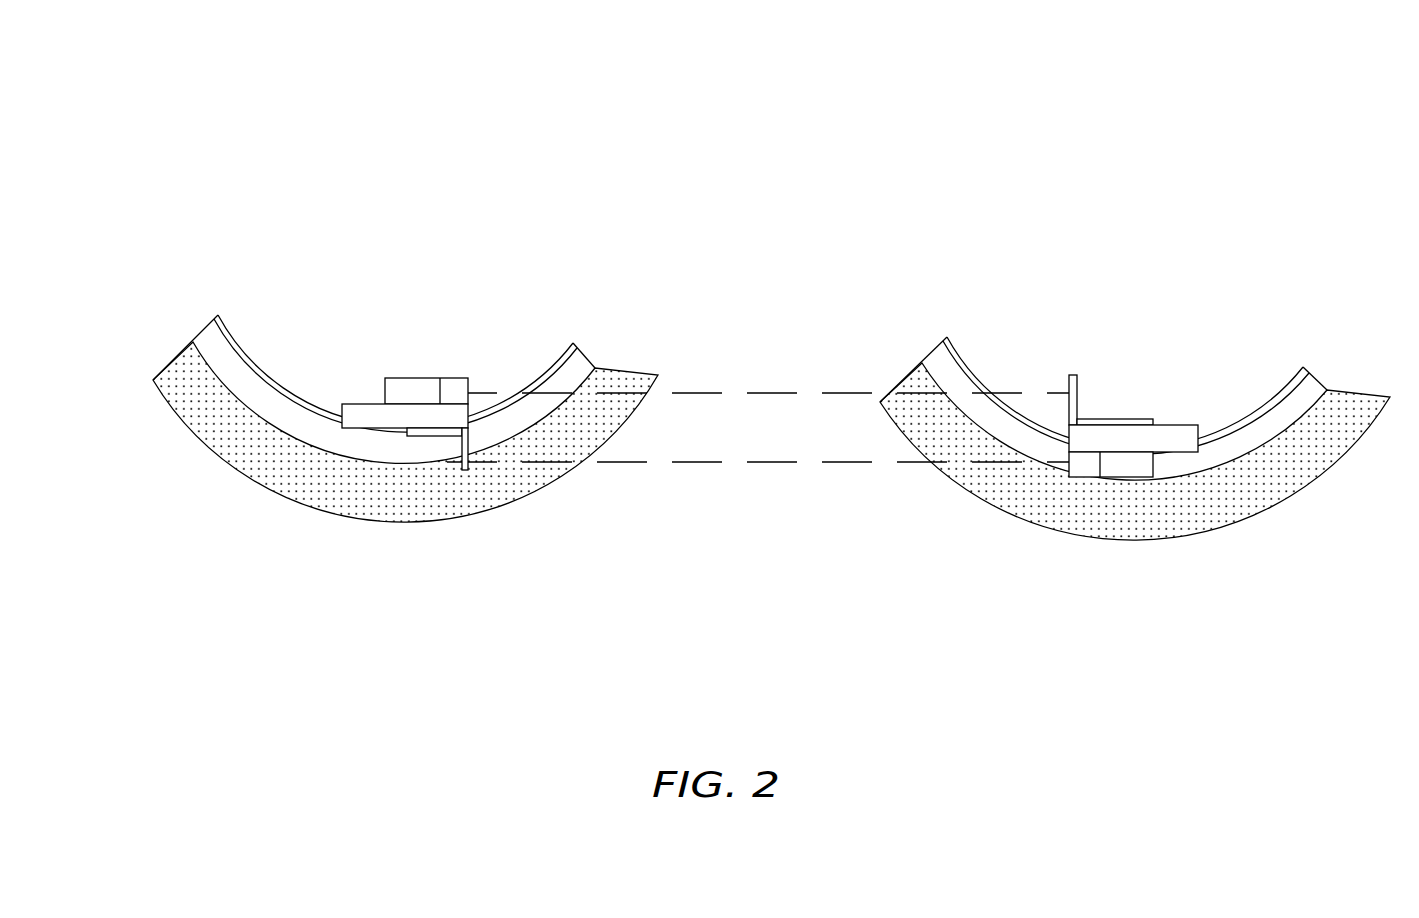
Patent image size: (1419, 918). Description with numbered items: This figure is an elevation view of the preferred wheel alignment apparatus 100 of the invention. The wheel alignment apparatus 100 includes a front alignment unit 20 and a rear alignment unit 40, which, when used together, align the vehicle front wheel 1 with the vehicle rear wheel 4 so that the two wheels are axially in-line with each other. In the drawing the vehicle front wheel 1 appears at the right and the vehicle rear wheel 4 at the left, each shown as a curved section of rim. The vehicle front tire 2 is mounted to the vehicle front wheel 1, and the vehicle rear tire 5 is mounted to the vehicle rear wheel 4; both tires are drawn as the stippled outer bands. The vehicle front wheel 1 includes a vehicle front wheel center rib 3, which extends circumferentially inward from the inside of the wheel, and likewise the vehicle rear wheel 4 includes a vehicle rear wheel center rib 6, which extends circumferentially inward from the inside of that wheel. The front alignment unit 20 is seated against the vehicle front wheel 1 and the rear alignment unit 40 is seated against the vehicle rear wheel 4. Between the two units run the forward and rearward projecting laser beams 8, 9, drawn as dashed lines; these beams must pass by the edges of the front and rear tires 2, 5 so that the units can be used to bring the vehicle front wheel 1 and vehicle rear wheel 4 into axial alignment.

The wheel alignment apparatus 100 is at (745, 323).
The vehicle front wheel 1 is at (1310, 377).
The vehicle front tire 2 is at (1248, 517).
The vehicle front wheel center rib 3 is at (1268, 402).
The vehicle rear wheel 4 is at (198, 333).
The vehicle rear tire 5 is at (297, 500).
The vehicle rear wheel center rib 6 is at (293, 398).
The forward projecting laser beam 8 is at (702, 393).
The rearward projecting laser beam 9 is at (702, 462).
The front alignment unit 20 is at (1122, 347).
The rear alignment unit 40 is at (421, 338).